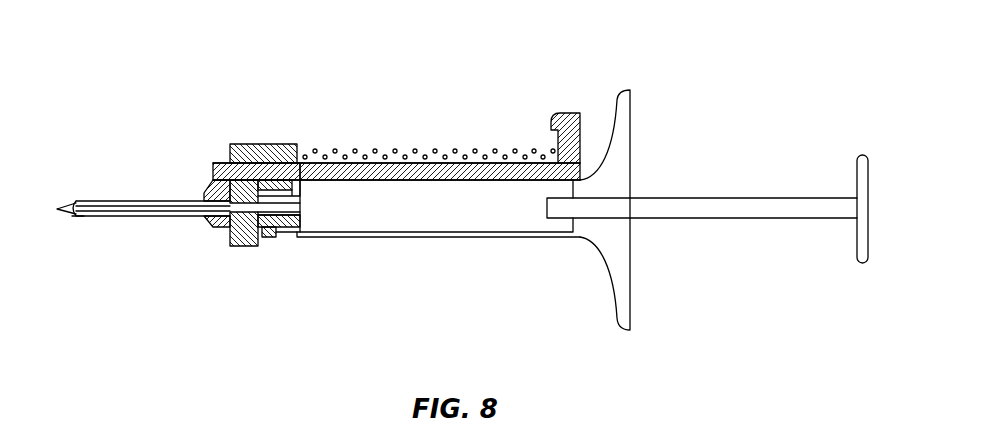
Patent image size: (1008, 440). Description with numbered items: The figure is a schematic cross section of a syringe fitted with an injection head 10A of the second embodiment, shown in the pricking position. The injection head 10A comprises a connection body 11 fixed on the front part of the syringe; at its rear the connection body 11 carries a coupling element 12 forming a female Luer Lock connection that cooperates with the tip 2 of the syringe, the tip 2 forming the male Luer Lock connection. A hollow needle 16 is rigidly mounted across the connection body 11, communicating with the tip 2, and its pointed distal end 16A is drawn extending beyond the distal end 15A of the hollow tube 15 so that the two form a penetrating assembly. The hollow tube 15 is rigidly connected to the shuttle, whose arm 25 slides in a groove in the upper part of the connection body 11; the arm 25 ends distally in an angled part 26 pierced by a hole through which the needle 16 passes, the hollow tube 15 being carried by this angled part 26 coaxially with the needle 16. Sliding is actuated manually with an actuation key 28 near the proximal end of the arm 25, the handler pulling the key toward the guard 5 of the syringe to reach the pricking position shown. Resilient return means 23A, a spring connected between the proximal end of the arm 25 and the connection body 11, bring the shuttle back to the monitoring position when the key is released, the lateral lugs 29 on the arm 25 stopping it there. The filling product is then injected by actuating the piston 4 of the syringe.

The tip 2 is at (298, 209).
The piston 4 is at (863, 155).
The guard 5 is at (632, 122).
The injection head 10A is at (338, 150).
The connection body 11 is at (264, 144).
The coupling element 12 is at (273, 228).
The hollow tube 15 is at (139, 200).
The distal end of the hollow tube 15A is at (83, 220).
The needle 16 is at (85, 204).
The distal end of the needle 16A is at (62, 219).
The resilient return means 23A is at (449, 150).
The arm 25 is at (478, 181).
The angled part 26 is at (212, 172).
The actuation key 28 is at (578, 112).
The lateral lugs 29 is at (415, 181).